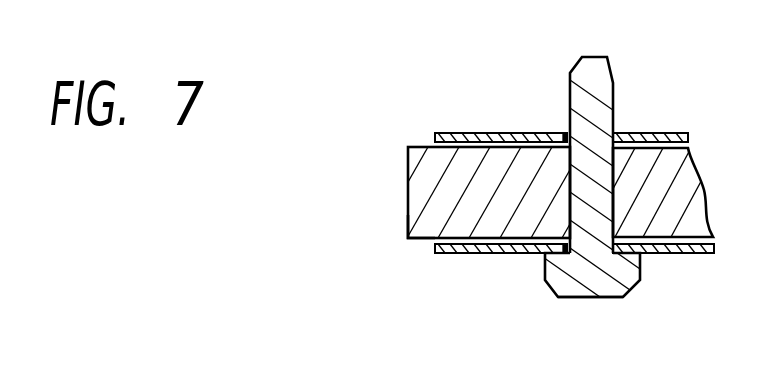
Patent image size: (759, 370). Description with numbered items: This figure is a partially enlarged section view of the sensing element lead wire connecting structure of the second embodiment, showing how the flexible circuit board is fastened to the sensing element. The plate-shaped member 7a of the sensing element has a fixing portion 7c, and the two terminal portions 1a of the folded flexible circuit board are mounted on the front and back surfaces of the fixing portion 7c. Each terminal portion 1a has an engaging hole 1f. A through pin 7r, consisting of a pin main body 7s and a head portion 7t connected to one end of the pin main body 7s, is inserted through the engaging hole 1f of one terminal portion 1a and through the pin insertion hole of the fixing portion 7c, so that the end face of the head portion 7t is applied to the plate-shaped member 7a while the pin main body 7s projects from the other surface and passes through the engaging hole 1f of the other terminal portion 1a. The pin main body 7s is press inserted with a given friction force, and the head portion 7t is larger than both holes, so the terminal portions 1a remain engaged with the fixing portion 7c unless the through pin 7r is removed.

The plate-shaped member 7a is at (386, 183).
The fixing portion 7c is at (408, 231).
The terminal portion 1a is at (502, 137).
The engaging hole 1f is at (618, 130).
The pin main body 7s is at (588, 73).
The through pin 7r is at (530, 304).
The head portion 7t is at (593, 291).